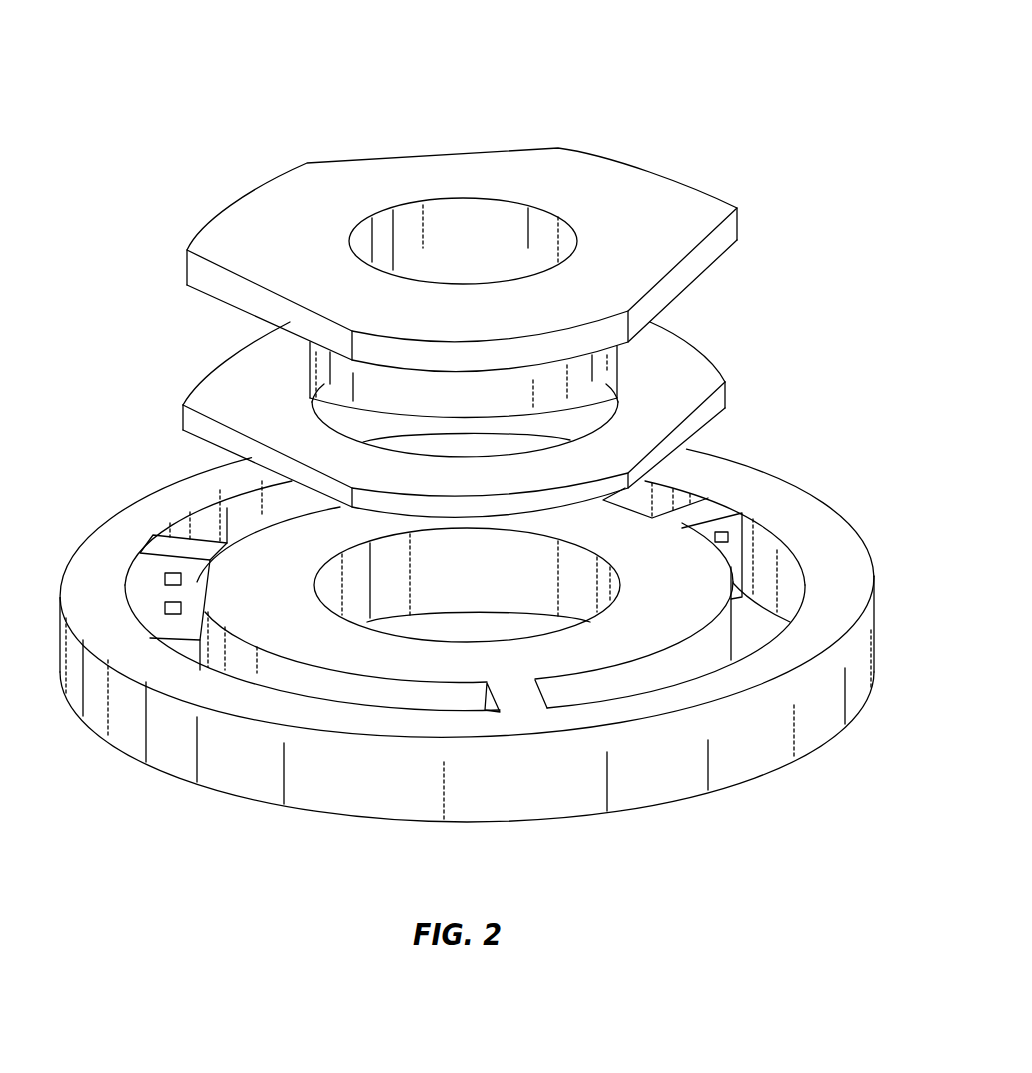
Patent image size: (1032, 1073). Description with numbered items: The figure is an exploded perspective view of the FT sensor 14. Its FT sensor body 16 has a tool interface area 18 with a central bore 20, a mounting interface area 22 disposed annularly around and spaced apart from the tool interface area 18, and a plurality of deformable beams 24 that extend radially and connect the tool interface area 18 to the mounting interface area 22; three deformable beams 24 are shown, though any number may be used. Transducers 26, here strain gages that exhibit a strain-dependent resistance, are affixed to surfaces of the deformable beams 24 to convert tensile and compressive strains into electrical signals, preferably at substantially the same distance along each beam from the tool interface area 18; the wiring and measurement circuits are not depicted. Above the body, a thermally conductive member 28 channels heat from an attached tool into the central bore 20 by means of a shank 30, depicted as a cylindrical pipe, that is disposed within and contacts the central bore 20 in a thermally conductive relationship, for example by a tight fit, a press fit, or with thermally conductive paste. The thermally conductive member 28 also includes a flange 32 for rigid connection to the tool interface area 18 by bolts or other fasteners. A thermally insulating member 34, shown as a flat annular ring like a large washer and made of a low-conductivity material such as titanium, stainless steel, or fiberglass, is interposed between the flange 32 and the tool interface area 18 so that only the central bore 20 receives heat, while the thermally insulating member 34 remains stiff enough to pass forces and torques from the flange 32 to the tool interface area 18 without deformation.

The FT sensor 14 is at (258, 76).
The FT sensor body 16 is at (829, 461).
The tool interface area 18 is at (640, 625).
The central bore 20 is at (445, 625).
The mounting interface area 22 is at (822, 550).
The deformable beams 24 is at (702, 500).
The transducers 26 is at (165, 578).
The thermally conductive member 28 is at (566, 125).
The shank 30 is at (557, 378).
The flange 32 is at (305, 193).
The thermally insulating member 34 is at (672, 403).